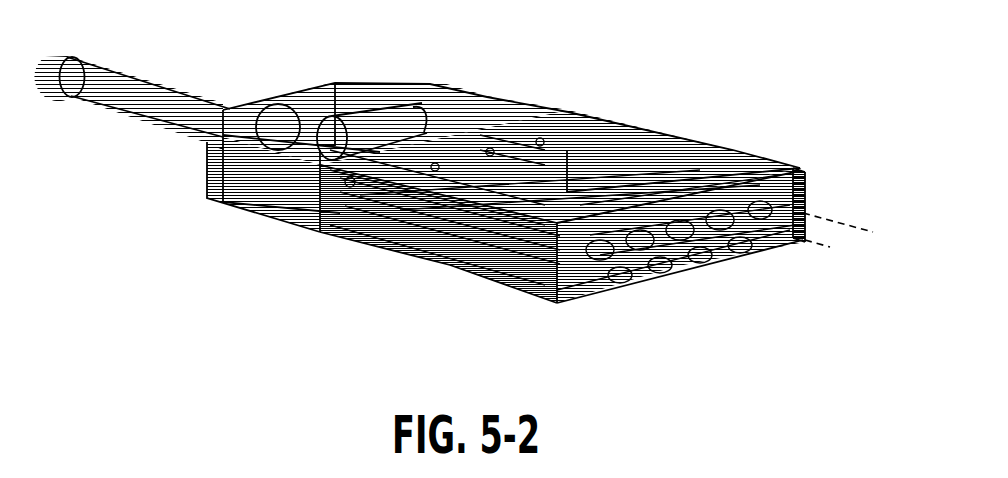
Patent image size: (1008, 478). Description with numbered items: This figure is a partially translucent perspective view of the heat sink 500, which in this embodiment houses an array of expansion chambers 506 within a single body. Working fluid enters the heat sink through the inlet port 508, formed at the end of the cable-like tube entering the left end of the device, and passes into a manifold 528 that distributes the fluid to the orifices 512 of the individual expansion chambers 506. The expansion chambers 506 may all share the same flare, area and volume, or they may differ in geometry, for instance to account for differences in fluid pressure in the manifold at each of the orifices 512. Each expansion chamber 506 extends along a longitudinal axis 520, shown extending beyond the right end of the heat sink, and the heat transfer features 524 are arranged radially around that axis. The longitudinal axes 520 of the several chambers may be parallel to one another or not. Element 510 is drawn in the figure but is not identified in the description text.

The heat sink 500 is at (817, 60).
The expansion chamber 506 is at (636, 130).
The inlet port 508 is at (61, 76).
The bottom plate 510 is at (597, 290).
The orifice 512 is at (300, 193).
The longitudinal axis 520 is at (773, 250).
The heat transfer features 524 is at (462, 245).
The manifold 528 is at (414, 109).